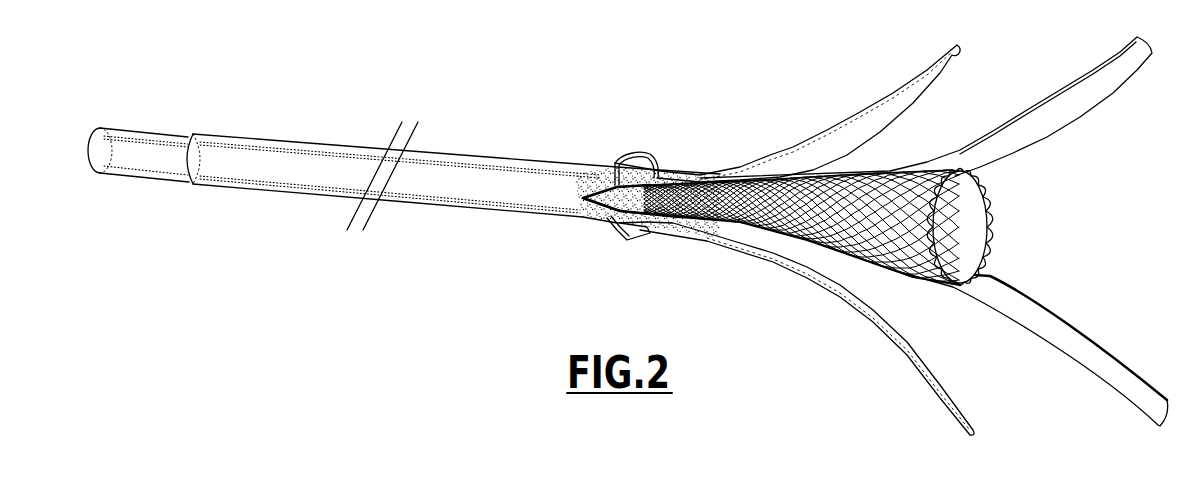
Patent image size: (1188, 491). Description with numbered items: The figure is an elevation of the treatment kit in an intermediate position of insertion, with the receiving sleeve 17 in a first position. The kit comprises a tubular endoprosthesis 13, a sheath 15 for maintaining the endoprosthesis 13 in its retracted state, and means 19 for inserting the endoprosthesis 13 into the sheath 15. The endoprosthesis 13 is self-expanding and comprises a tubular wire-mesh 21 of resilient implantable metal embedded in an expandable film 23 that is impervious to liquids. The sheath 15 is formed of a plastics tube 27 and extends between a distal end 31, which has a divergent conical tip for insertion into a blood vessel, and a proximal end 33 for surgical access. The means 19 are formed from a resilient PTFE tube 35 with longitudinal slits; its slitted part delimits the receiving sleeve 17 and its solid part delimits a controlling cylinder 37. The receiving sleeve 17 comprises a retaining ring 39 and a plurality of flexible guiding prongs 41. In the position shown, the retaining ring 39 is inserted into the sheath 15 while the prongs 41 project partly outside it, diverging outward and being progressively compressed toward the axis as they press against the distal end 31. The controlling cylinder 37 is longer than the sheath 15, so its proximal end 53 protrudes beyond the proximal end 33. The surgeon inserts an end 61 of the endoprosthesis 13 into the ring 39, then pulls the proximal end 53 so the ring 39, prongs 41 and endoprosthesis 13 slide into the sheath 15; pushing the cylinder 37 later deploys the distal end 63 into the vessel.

The tubular endoprosthesis 13 is at (867, 174).
The sheath 15 is at (300, 140).
The receiving sleeve 17 is at (853, 120).
The means for inserting the endoprosthesis 19 is at (138, 130).
The tubular wire-mesh 21 is at (1000, 212).
The expandable film 23 is at (820, 235).
The tube 27 is at (268, 190).
The distal end 31 is at (605, 232).
The proximal end 33 is at (187, 158).
The resilient tube 35 is at (584, 223).
The controlling cylinder 37 is at (472, 200).
The retaining ring 39 is at (638, 190).
The flexible guiding prongs 41 is at (1082, 347).
The proximal end of the controlling cylinder 53 is at (86, 149).
The end of the endoprosthesis 61 is at (577, 190).
The distal end of the endoprosthesis 63 is at (1002, 248).